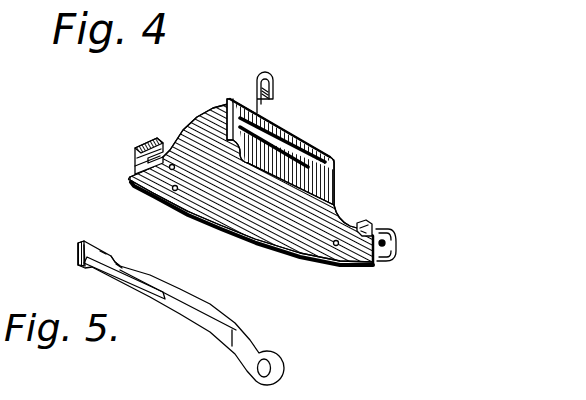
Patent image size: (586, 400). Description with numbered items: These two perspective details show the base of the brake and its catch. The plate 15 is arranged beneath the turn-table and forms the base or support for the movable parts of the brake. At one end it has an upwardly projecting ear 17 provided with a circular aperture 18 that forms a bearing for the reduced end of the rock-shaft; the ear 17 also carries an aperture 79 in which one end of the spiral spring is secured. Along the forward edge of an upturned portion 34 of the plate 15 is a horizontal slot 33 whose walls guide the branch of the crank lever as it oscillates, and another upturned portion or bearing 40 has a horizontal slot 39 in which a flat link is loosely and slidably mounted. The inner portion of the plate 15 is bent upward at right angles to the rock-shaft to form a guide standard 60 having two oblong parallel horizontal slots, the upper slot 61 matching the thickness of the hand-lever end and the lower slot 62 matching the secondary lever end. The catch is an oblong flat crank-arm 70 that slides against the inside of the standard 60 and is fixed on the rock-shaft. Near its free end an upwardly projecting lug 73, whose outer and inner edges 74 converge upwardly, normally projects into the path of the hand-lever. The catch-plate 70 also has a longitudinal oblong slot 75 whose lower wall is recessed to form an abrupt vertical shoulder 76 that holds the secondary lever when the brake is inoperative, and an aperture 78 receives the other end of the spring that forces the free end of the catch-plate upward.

In FIG. 4, the plate 15 is at (272, 239).
In FIG. 4, the upwardly projecting ear 17 is at (392, 238).
In FIG. 4, the circular aperture 18 is at (392, 256).
In FIG. 4, the horizontal slot 33 is at (135, 158).
In FIG. 4, the upturned portion 34 is at (143, 149).
In FIG. 4, the horizontal slot 39 is at (268, 91).
In FIG. 4, the upturned portion or bearing 40 is at (270, 75).
In FIG. 4, the guide standard 60 is at (328, 172).
In FIG. 4, the upper slot 61 is at (281, 150).
In FIG. 4, the lower slot 62 is at (303, 152).
In FIG. 5, the crank-arm 70 is at (222, 312).
In FIG. 5, the upwardly projecting lug 73 is at (113, 258).
In FIG. 5, the outer and inner edges 74 is at (103, 253).
In FIG. 5, the oblong slot 75 is at (140, 290).
In FIG. 5, the shoulder 76 is at (80, 268).
In FIG. 5, the aperture 78 is at (230, 348).
In FIG. 4, the aperture 79 is at (378, 229).